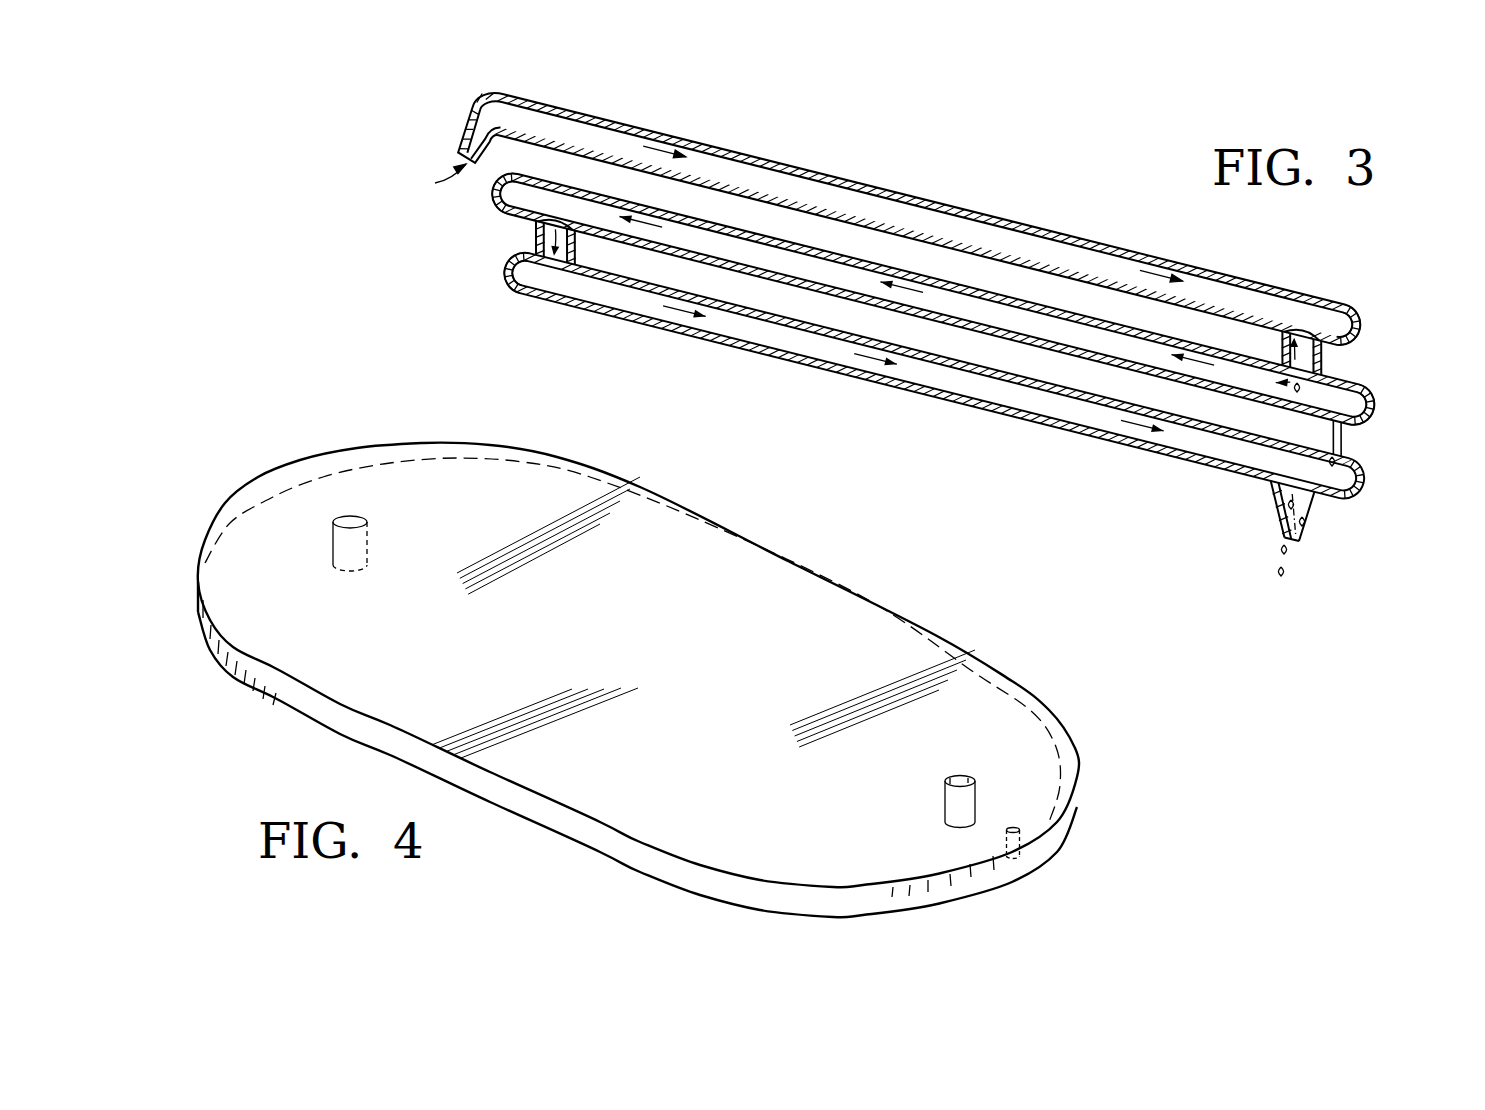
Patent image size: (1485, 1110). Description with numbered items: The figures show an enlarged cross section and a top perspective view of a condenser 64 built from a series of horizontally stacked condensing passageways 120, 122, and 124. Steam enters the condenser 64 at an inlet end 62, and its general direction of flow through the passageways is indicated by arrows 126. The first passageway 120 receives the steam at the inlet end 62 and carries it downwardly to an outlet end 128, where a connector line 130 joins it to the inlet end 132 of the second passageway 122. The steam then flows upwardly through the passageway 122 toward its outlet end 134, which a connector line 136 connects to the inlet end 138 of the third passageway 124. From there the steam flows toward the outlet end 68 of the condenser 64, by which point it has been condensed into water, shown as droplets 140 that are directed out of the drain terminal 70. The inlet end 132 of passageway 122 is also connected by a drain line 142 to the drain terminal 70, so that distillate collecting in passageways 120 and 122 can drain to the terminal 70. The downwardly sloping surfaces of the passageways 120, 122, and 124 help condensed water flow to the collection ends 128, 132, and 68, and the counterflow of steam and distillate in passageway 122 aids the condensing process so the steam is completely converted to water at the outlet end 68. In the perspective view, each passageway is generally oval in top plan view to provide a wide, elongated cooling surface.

In FIG. 3, the inlet end 62 is at (468, 152).
In FIG. 3, the condenser 64 is at (915, 189).
In FIG. 4, the condenser 64 is at (722, 497).
In FIG. 3, the outlet end 68 is at (1262, 480).
In FIG. 3, the drain terminal 70 is at (1312, 523).
In FIG. 3, the condenser passageway 120 is at (980, 233).
In FIG. 3, the condenser passageway 122 is at (1008, 317).
In FIG. 4, the condenser passageway 122 is at (840, 652).
In FIG. 3, the condenser passageway 124 is at (1050, 410).
In FIG. 3, the arrows 126 is at (680, 162).
In FIG. 3, the outlet end 128 is at (1337, 320).
In FIG. 3, the connector line 130 is at (1325, 355).
In FIG. 4, the connector line 130 is at (972, 800).
In FIG. 3, the inlet end 132 is at (1365, 398).
In FIG. 3, the outlet end 134 is at (510, 188).
In FIG. 3, the connector line 136 is at (578, 208).
In FIG. 4, the connector line 136 is at (343, 543).
In FIG. 3, the inlet end 138 is at (597, 300).
In FIG. 3, the droplets 140 is at (1288, 568).
In FIG. 3, the drain line 142 is at (1346, 440).
In FIG. 4, the drain line 142 is at (1020, 843).